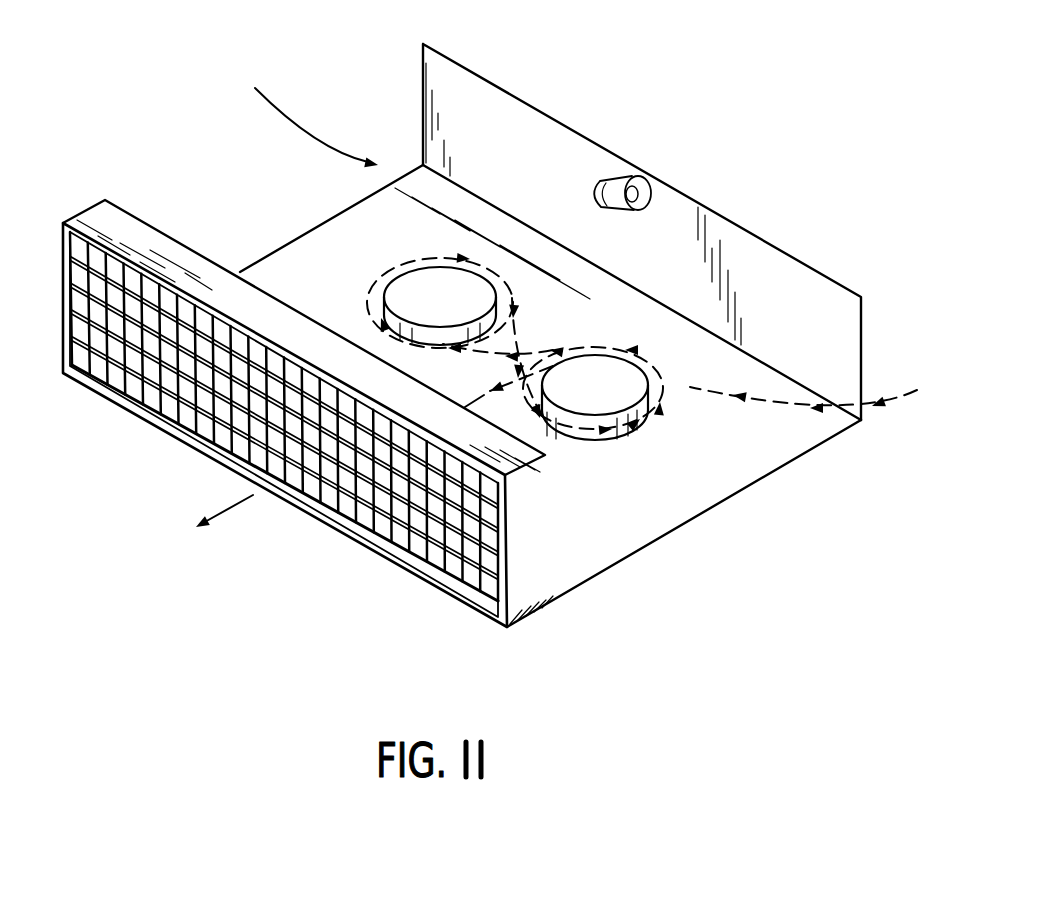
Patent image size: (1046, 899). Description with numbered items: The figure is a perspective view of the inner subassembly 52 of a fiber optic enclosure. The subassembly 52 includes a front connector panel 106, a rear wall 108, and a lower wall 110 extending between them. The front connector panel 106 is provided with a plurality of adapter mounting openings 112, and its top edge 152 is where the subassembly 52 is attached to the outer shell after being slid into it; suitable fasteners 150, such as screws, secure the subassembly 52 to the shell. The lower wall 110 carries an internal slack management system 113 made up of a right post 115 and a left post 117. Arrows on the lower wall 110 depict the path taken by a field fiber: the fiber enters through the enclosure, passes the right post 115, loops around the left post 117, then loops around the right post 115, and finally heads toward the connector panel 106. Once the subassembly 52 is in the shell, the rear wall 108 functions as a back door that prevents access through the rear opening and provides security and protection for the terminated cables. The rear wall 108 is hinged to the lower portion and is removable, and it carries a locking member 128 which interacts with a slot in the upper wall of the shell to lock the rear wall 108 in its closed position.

The inner subassembly 52 is at (564, 352).
The front connector panel 106 is at (63, 297).
The rear wall 108 is at (862, 342).
The lower wall 110 is at (767, 477).
The adapter mounting openings 112 is at (222, 418).
The internal slack management system 113 is at (577, 237).
The right post 115 is at (390, 287).
The left post 117 is at (640, 440).
The locking member 128 is at (598, 183).
The fasteners 150 is at (332, 370).
The top edge 152 is at (108, 220).